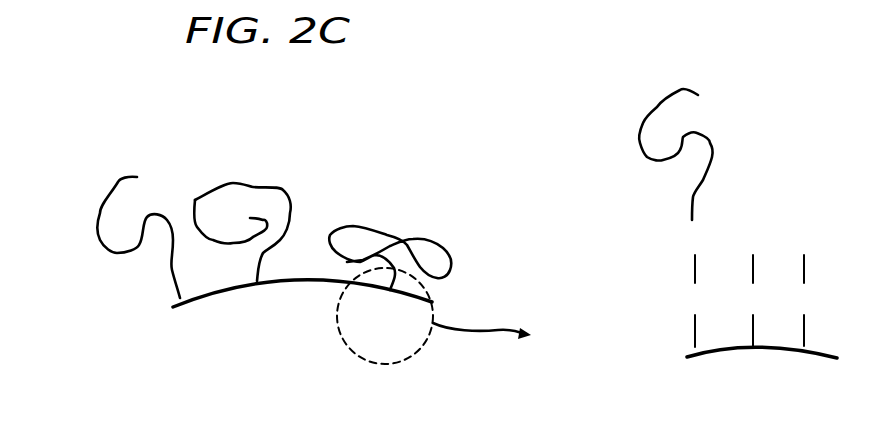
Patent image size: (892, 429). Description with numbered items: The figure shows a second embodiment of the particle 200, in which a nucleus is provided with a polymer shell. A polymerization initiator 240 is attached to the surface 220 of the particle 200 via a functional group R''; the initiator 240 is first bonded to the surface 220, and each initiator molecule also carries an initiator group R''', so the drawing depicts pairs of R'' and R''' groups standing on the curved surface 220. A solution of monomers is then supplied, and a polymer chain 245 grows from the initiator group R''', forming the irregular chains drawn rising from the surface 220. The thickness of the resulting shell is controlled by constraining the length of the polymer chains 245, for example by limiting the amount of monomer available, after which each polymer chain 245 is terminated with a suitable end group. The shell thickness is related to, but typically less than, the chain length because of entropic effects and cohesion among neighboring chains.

The particle 200 is at (85, 139).
The polymer chain 245 is at (100, 243).
The surface 220 is at (277, 287).
The polymerization initiator 240 is at (677, 238).